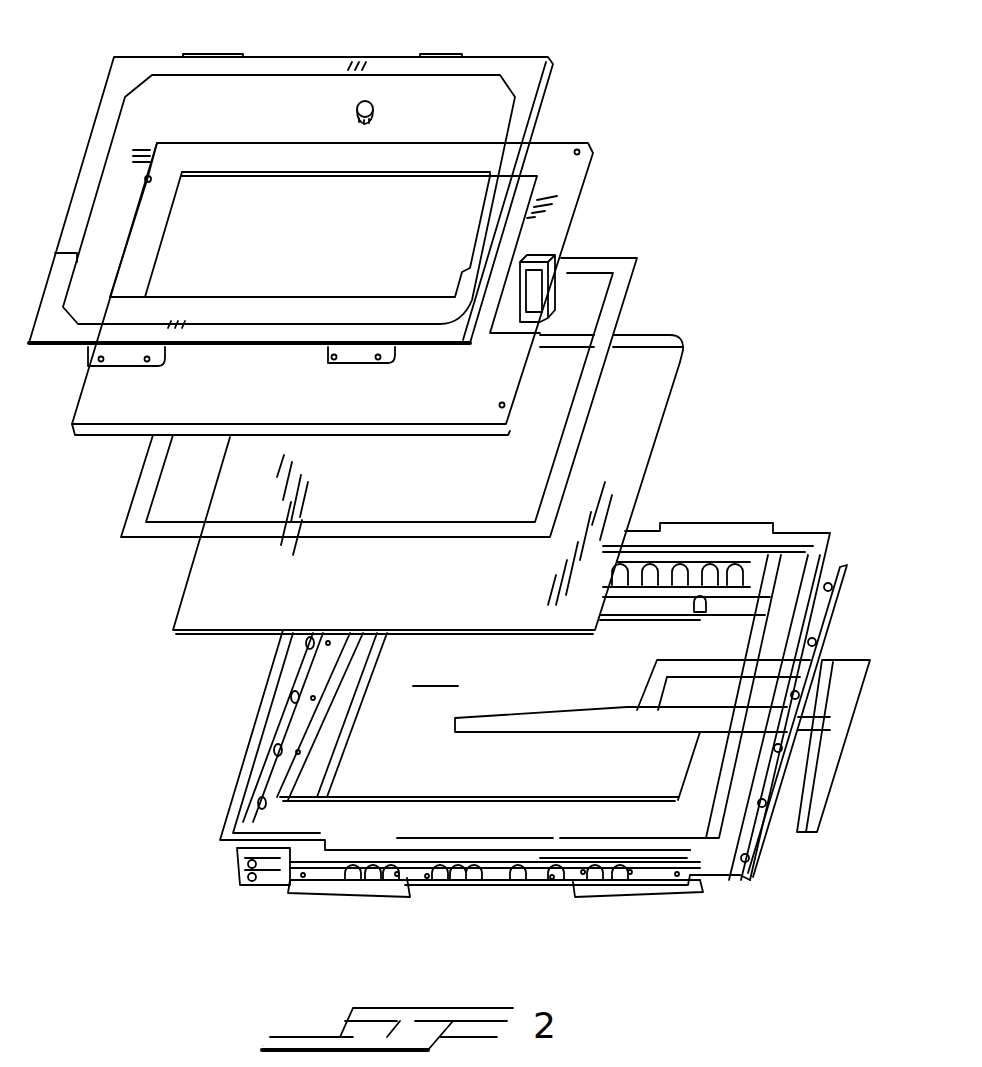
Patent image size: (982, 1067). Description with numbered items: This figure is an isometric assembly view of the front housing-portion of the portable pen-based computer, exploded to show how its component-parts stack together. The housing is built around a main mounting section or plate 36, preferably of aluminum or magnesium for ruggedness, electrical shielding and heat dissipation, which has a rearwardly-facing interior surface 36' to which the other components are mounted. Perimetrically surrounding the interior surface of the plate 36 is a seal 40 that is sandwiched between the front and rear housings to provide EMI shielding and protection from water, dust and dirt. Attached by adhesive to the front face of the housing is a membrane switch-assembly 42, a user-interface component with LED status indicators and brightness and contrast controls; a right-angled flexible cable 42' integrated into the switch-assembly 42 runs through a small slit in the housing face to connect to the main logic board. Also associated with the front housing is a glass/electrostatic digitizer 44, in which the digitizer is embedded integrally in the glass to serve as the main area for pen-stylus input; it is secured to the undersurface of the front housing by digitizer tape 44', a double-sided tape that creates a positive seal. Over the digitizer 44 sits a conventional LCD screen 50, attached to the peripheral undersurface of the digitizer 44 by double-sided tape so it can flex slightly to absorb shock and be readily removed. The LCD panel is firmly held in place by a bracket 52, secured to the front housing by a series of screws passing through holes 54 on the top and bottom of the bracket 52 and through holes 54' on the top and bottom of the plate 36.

The bracket 52 is at (553, 86).
The LCD screen 50 is at (563, 198).
The holes 54 is at (383, 386).
The glass/electrostatic digitizer 44 is at (448, 484).
The digitizer tape 44' is at (708, 538).
The seal 40 is at (830, 532).
The membrane switch-assembly 42 is at (548, 762).
The flexible cable 42' is at (843, 653).
The holes 54' is at (541, 937).
The main mounting section or plate 36 is at (281, 733).
The interior surface 36' is at (438, 672).